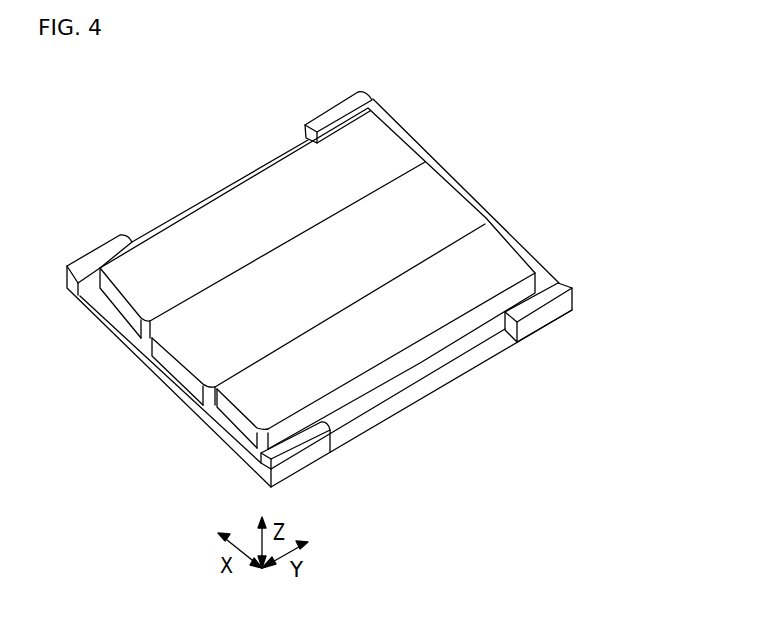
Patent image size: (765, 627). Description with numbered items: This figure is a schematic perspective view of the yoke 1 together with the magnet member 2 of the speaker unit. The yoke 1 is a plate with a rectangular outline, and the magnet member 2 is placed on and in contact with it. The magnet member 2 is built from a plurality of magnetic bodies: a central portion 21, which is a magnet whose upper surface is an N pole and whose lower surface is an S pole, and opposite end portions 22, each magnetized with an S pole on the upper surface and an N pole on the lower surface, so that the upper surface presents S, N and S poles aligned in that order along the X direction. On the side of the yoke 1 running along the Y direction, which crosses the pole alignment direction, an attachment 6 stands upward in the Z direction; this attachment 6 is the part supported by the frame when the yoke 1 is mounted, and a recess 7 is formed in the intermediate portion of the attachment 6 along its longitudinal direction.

The yoke 1 is at (185, 390).
The magnet member 2 is at (345, 273).
The central portion (first magnetic body) 21 is at (427, 210).
The opposite end portions (second magnetic bodies) 22 is at (392, 157).
The attachment 6 is at (300, 458).
The recess 7 is at (430, 386).